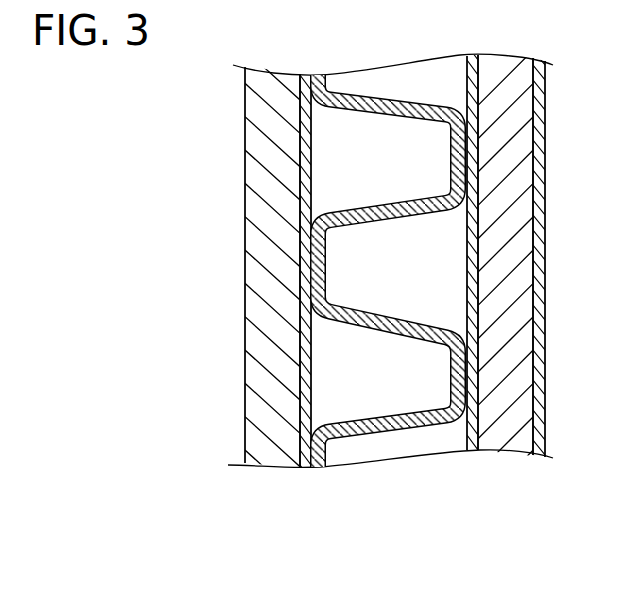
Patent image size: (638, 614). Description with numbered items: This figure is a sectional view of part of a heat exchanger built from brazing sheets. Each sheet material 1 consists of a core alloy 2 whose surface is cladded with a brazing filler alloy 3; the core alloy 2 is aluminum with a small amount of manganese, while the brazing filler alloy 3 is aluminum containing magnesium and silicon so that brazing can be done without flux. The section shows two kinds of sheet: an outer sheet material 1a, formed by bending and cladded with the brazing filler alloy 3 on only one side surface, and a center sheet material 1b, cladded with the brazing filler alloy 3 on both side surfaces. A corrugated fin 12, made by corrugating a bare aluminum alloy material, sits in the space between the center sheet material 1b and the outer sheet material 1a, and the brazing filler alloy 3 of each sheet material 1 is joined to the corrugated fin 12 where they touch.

The sheet material 1 is at (395, 320).
The outer sheet material 1a is at (295, 538).
The center sheet material 1b is at (588, 532).
The core alloy 2 is at (278, 453).
The brazing filler alloy 3 is at (305, 463).
The corrugated fin 12 is at (357, 427).